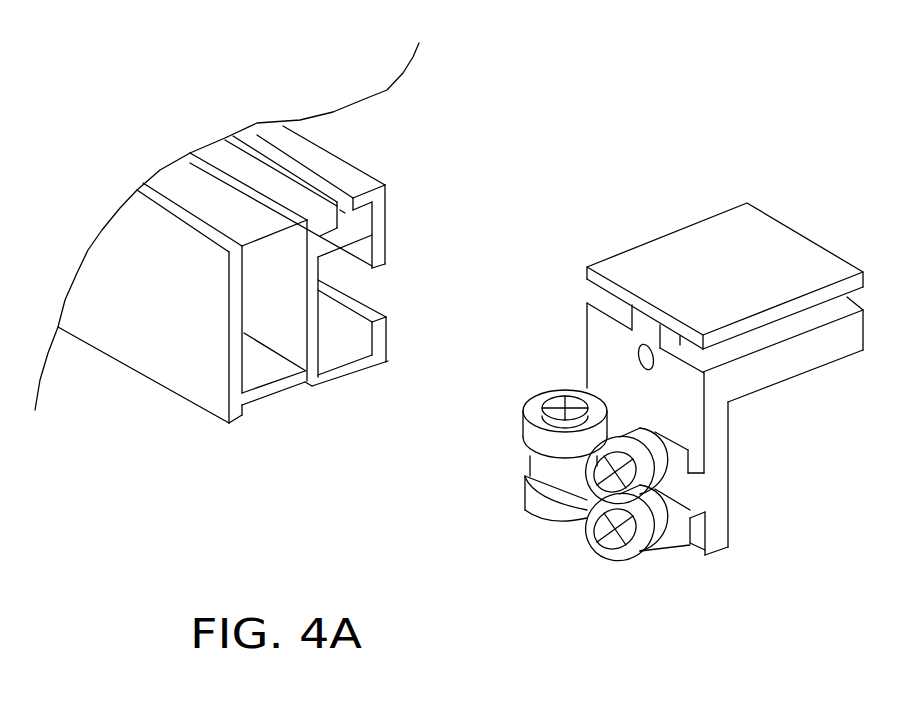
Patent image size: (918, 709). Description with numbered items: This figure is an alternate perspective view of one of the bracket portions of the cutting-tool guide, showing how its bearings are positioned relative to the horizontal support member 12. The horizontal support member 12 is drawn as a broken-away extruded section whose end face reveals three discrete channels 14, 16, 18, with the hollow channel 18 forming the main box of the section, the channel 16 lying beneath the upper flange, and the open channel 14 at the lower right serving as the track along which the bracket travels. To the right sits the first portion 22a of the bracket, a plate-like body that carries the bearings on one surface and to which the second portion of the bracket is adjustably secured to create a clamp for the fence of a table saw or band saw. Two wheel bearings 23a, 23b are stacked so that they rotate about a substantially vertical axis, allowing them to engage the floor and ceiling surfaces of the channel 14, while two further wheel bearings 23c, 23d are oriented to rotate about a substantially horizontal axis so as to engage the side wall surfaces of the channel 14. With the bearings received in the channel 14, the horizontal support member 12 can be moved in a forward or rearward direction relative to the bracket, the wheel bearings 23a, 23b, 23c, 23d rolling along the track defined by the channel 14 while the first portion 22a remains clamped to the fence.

The horizontal support member 12 is at (264, 273).
The channel 14 is at (352, 333).
The channel 16 is at (343, 219).
The channel 18 is at (250, 373).
The first portion 22a is at (725, 347).
The wheel bearing 23a is at (540, 503).
The wheel bearing 23b is at (524, 414).
The wheel bearing 23c is at (655, 543).
The wheel bearing 23d is at (712, 552).